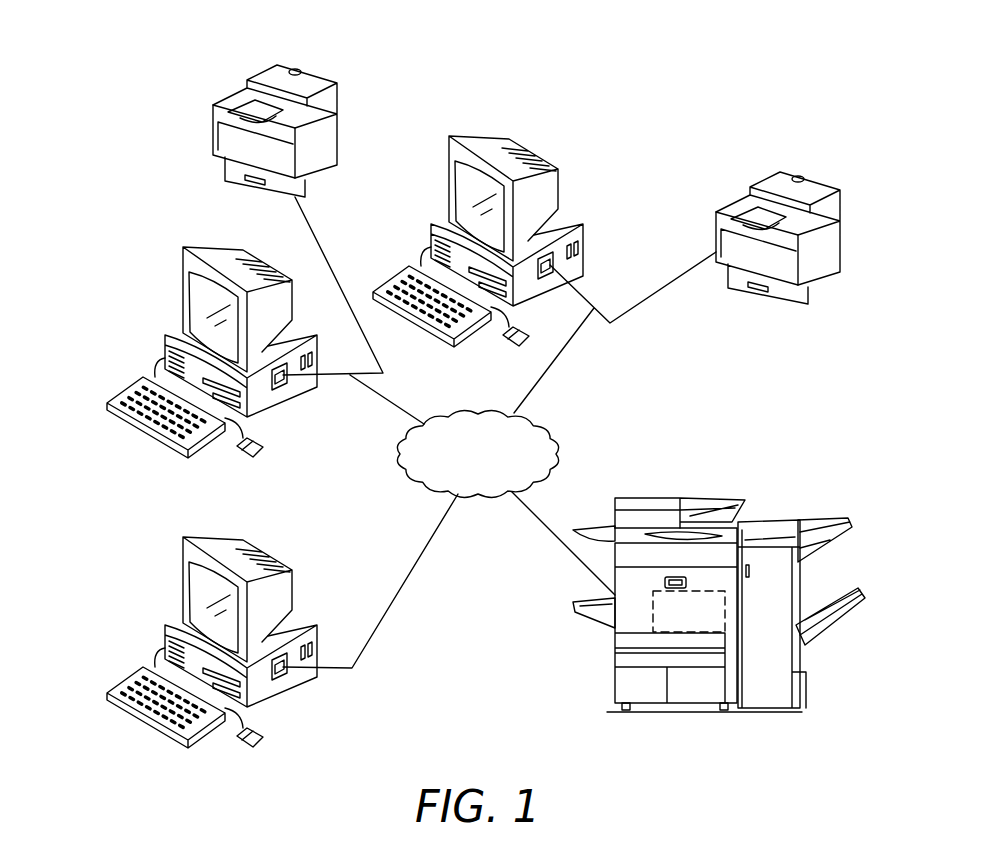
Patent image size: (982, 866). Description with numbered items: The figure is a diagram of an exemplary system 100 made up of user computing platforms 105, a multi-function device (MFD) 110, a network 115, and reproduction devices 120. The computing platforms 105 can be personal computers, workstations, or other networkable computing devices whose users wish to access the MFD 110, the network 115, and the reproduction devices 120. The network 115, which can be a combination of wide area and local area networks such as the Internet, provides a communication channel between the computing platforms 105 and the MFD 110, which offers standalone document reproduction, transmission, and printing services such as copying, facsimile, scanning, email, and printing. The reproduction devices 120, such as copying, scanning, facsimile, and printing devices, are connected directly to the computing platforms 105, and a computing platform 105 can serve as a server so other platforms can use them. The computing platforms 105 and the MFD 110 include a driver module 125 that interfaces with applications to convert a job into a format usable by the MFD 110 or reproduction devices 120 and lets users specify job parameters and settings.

The system 100 is at (558, 45).
The user computing platforms 105 is at (177, 338).
The multi-function device (MFD) 110 is at (701, 499).
The network 115 is at (500, 465).
The reproduction devices 120 is at (213, 138).
The driver module 125 is at (200, 307).